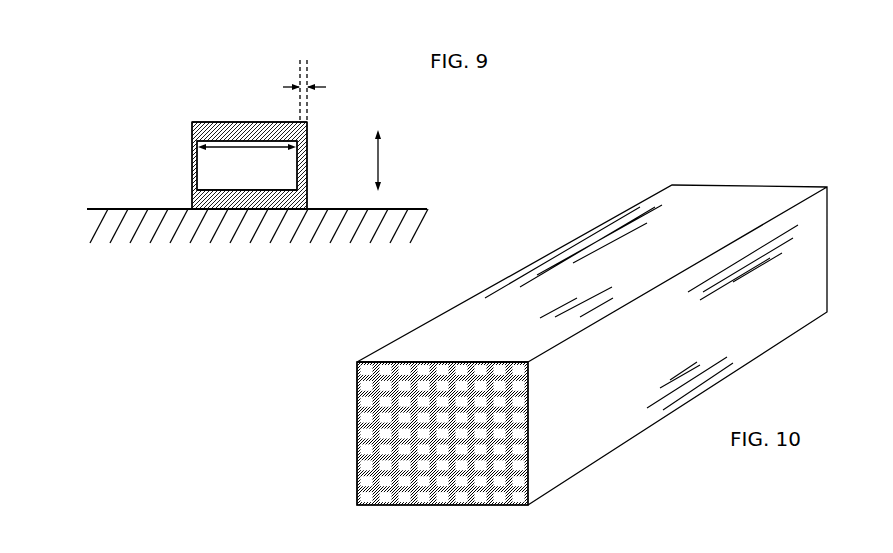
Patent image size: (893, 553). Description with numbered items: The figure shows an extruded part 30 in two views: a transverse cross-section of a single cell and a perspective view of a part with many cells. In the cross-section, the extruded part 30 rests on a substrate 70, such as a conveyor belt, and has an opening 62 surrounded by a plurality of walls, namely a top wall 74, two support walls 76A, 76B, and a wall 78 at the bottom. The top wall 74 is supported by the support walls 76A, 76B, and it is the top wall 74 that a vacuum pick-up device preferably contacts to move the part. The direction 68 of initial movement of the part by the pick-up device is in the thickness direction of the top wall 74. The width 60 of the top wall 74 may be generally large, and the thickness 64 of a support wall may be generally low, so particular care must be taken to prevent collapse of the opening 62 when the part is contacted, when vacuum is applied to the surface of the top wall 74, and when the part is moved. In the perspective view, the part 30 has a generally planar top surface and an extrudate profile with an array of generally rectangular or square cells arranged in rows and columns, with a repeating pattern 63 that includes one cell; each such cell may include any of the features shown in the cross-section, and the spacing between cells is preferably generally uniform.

In FIG. 9, the extruded part 30 is at (251, 46).
In FIG. 10, the extruded part 30 is at (726, 154).
In FIG. 9, the width of the top wall 60 is at (248, 140).
In FIG. 9, the opening 62 is at (220, 163).
In FIG. 10, the opening 62 is at (368, 450).
In FIG. 10, the repeating pattern 63 is at (370, 372).
In FIG. 9, the thickness of a support wall 64 is at (320, 86).
In FIG. 9, the direction of initial movement 68 is at (382, 150).
In FIG. 9, the substrate 70 is at (183, 245).
In FIG. 9, the top wall 74 is at (222, 125).
In FIG. 9, the support wall 76A is at (192, 153).
In FIG. 9, the support wall 76B is at (307, 152).
In FIG. 9, the wall 78 is at (230, 202).